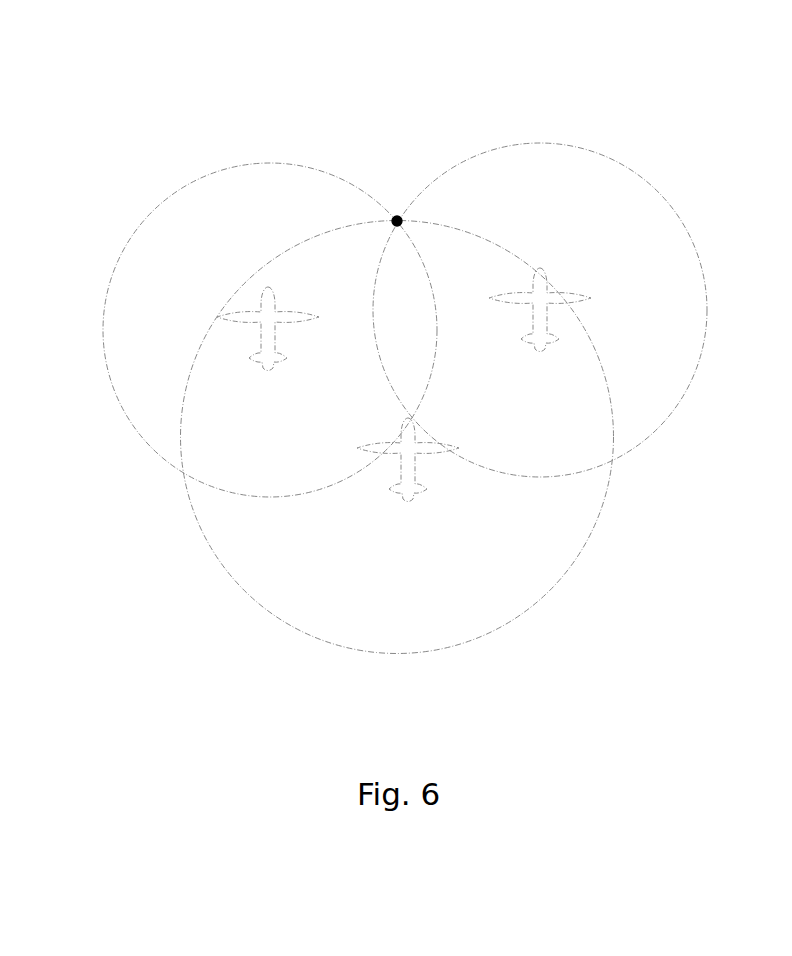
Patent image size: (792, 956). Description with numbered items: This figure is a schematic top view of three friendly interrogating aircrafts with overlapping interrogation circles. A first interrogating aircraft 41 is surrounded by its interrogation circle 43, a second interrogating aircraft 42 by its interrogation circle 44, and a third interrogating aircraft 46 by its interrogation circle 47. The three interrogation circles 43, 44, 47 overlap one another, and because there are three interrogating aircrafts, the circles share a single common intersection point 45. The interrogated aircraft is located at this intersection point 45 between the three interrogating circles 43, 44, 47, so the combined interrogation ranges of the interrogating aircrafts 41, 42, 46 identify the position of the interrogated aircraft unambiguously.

The interrogating aircraft 41 is at (278, 362).
The interrogating aircraft 42 is at (550, 342).
The interrogation circle 43 is at (268, 162).
The interrogation circle 44 is at (663, 197).
The intersection point 45 is at (397, 216).
The interrogating aircraft 46 is at (390, 487).
The interrogation circle 47 is at (213, 553).